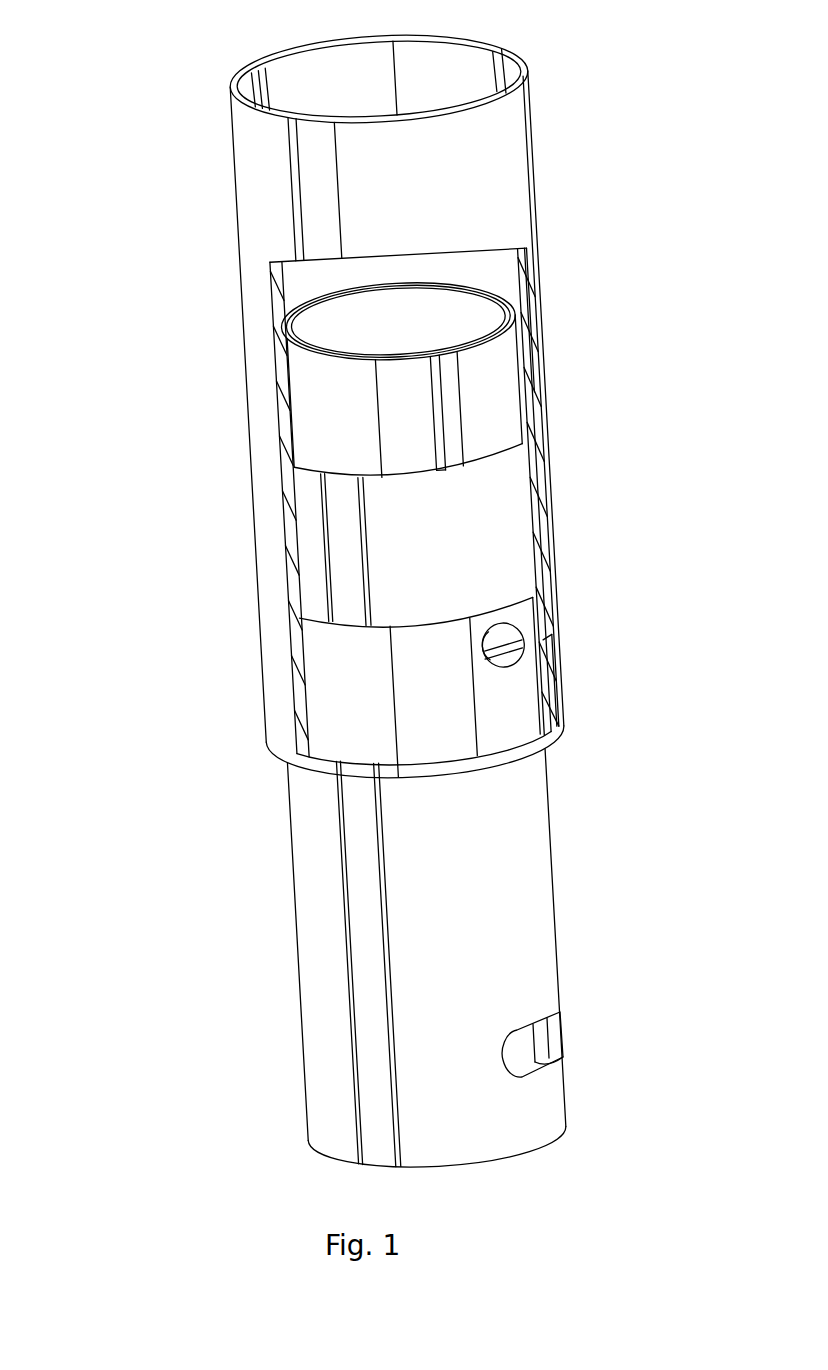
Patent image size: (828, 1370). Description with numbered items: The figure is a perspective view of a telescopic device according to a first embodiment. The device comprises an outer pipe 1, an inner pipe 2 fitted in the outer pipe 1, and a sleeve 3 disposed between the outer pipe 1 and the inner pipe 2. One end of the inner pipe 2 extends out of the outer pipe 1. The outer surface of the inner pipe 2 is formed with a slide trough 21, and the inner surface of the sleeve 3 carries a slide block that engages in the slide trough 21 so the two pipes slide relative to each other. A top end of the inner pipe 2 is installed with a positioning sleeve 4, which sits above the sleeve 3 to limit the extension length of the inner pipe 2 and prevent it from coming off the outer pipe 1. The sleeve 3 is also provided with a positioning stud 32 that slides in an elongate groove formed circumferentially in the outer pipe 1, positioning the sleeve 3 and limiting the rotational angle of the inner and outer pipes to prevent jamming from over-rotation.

The outer pipe 1 is at (282, 230).
The inner pipe 2 is at (457, 902).
The slide trough 21 is at (345, 900).
The sleeve 3 is at (355, 683).
The positioning stud 32 is at (510, 633).
The positioning sleeve 4 is at (348, 417).